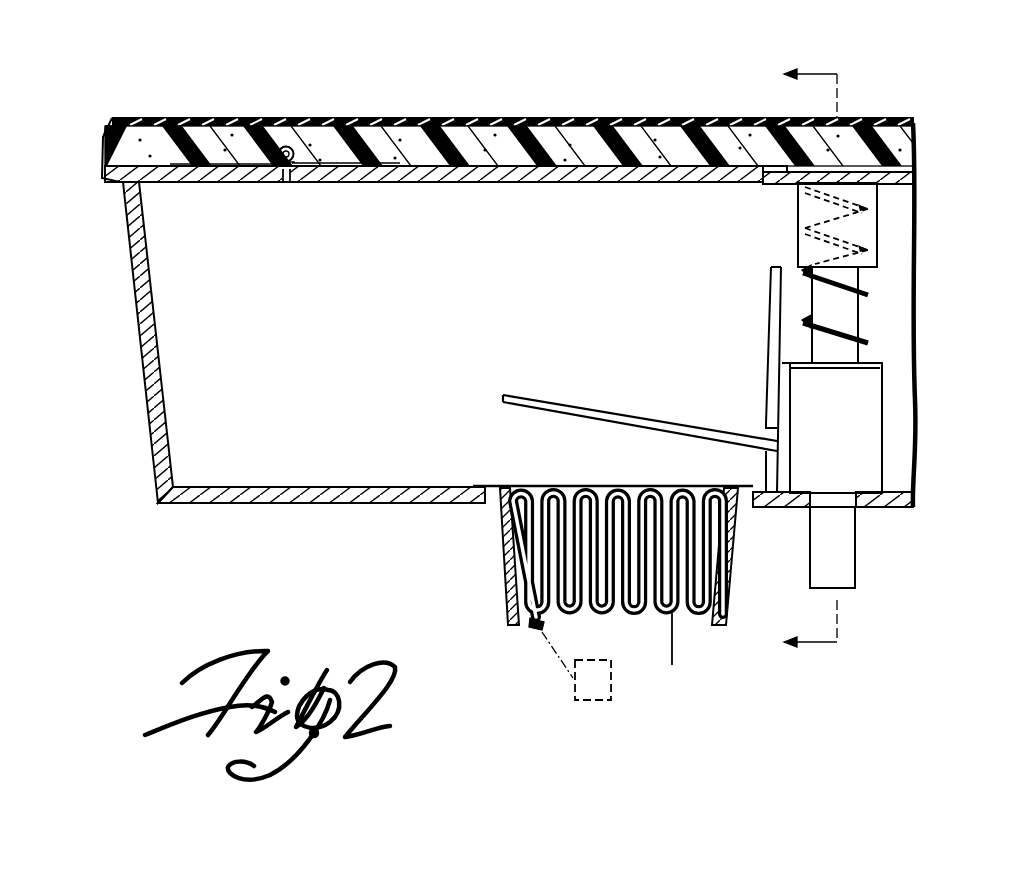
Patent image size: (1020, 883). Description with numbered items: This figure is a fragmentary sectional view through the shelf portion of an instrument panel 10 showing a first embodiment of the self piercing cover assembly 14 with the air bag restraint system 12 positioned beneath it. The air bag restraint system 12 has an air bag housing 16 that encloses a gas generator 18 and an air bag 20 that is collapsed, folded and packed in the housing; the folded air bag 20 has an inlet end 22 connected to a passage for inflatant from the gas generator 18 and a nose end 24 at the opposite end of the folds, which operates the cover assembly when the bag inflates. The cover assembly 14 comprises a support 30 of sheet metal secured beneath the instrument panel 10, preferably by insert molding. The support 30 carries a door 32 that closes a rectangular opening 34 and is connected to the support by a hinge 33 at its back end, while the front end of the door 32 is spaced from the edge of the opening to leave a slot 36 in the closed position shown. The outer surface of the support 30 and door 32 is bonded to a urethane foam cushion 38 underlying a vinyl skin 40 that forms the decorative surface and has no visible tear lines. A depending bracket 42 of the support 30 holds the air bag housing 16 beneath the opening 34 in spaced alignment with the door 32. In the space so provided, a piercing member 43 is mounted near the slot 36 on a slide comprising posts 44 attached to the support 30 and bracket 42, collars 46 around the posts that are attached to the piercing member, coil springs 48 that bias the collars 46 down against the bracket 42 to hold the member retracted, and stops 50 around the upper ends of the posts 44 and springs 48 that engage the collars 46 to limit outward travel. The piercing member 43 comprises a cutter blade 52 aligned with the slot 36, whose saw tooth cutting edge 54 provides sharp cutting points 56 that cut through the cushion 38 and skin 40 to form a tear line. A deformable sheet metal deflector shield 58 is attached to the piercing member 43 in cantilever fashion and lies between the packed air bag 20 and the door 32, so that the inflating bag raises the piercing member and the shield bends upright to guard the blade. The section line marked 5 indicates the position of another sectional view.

The instrument panel 10 is at (174, 110).
The air bag restraint system 12 is at (499, 549).
The self piercing cover assembly 14 is at (133, 339).
The air bag housing 16 is at (726, 540).
The gas generator 18 is at (600, 688).
The air bag 20 is at (690, 651).
The inlet end 22 is at (529, 626).
The nose end 24 is at (713, 488).
The support 30 is at (104, 180).
The door 32 is at (432, 178).
The hinge 33 is at (289, 146).
The rectangular opening 34 is at (287, 184).
The slot 36 is at (776, 180).
The cushion 38 is at (598, 142).
The skin 40 is at (486, 122).
The bracket 42 is at (164, 457).
The piercing member 43 is at (770, 352).
The posts 44 is at (838, 315).
The collars 46 is at (868, 478).
The coil springs 48 is at (864, 270).
The stops 50 is at (797, 247).
The cutter blade 52 is at (766, 395).
The saw tooth cutting edge 54 is at (773, 313).
The cutting points 56 is at (772, 266).
The deflector shield 58 is at (537, 397).
The section line 5- 5 is at (796, 380).